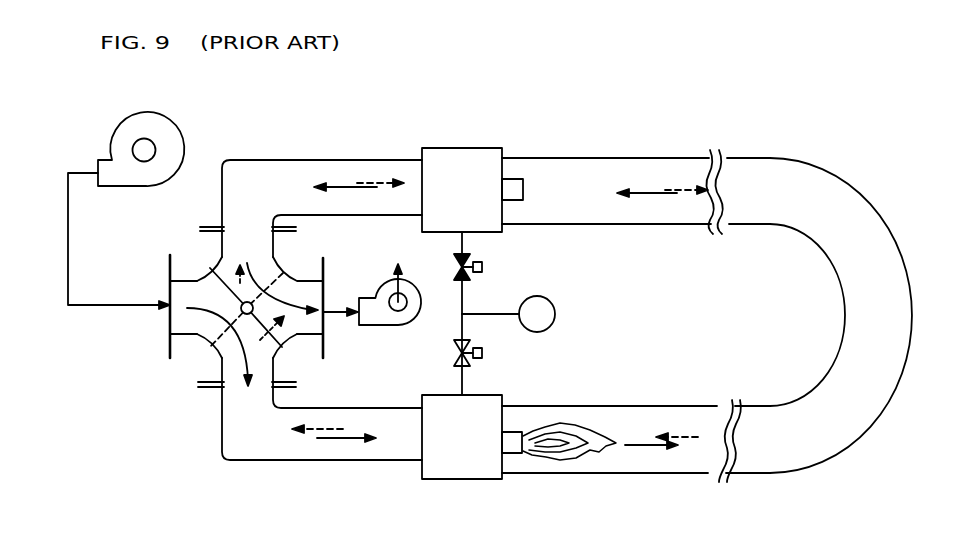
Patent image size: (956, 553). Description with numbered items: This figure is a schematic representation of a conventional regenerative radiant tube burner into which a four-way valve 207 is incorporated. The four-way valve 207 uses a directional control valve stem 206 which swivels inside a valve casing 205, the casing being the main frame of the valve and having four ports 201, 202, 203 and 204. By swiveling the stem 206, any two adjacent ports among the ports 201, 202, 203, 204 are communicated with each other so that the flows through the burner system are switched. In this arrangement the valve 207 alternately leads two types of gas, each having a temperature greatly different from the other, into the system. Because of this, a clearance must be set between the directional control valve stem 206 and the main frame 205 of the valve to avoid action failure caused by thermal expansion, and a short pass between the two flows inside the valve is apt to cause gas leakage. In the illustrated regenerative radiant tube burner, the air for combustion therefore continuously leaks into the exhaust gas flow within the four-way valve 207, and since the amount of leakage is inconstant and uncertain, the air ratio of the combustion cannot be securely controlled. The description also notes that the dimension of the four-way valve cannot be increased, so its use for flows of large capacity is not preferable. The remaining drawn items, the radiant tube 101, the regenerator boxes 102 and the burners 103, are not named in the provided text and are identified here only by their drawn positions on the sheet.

The main pipe (U-shaped duct) 101 is at (867, 417).
The heat exchanger / regenerator box 102 is at (463, 157).
The burner 103 is at (512, 183).
The port 201 is at (263, 250).
The port 202 is at (310, 330).
The port 203 is at (205, 374).
The port 204 is at (182, 278).
The valve casing 205 is at (198, 343).
The directional control valve stem 206 is at (295, 338).
The four-way valve 207 is at (229, 340).